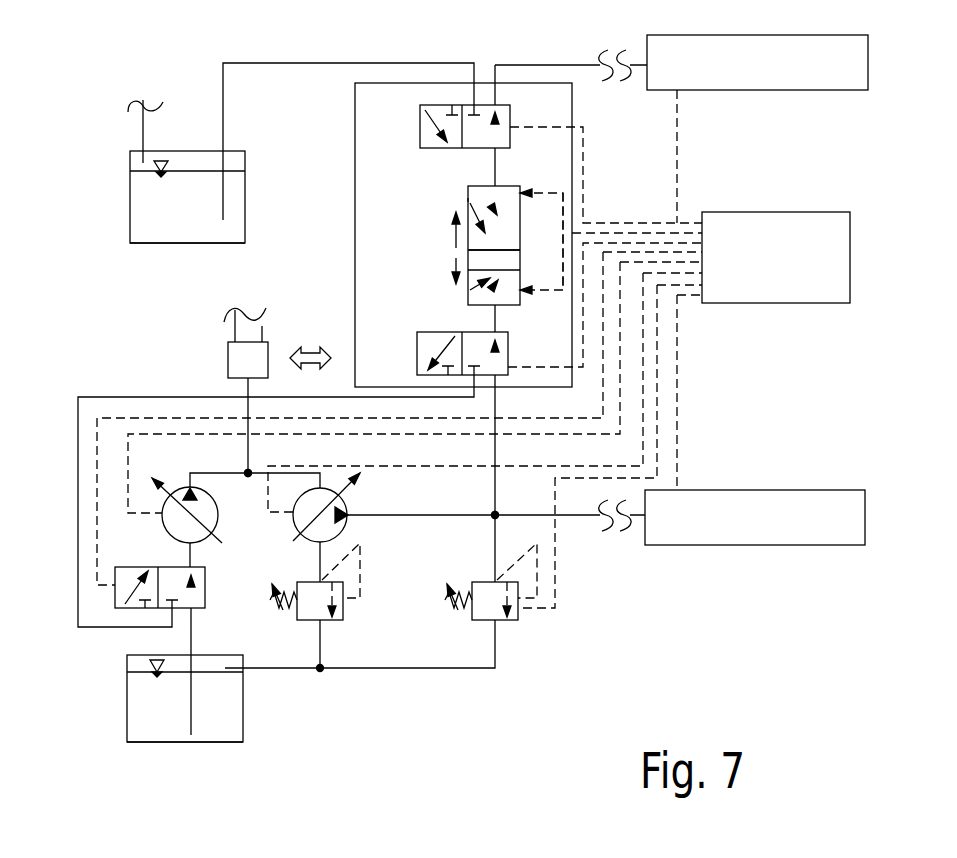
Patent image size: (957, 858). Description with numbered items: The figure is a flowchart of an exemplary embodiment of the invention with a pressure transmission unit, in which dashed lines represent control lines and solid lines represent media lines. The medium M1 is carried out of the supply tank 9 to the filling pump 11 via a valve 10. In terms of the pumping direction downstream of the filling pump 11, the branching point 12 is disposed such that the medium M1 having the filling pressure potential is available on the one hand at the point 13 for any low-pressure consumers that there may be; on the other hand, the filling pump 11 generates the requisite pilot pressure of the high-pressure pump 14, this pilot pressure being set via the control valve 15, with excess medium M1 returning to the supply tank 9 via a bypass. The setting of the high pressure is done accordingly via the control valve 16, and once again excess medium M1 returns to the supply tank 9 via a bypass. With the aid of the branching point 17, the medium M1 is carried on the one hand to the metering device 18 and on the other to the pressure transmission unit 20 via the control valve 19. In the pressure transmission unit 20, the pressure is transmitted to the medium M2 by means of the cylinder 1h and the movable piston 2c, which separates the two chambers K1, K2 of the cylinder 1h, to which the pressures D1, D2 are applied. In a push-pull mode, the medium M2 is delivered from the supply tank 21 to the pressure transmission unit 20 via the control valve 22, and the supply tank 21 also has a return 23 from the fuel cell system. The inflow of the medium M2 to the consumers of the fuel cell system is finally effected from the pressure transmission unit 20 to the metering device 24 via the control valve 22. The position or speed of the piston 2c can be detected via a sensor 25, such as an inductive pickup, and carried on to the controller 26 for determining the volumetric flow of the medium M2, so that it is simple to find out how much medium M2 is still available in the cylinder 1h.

The supply tank 9 is at (215, 742).
The valve 10 is at (205, 590).
The filling pump 11 is at (218, 520).
The branching point 12 is at (248, 473).
The point 13 is at (242, 320).
The high-pressure pump 14 is at (345, 528).
The control valve 15 is at (343, 608).
The control valve 16 is at (515, 620).
The branching point 17 is at (495, 515).
The metering device 18 is at (745, 531).
The control valve 19 is at (417, 350).
The pressure transmission unit 20 is at (454, 244).
The supply tank 21 is at (175, 243).
The control valve 22 is at (420, 120).
The return 23 is at (140, 101).
The metering device 24 is at (760, 78).
The sensor 25 is at (563, 262).
The controller 26 is at (780, 273).
The medium M1 is at (155, 712).
The medium M2 is at (155, 210).
The first piston chamber K1 is at (498, 280).
The second piston chamber K2 is at (497, 213).
The first pressure D1 is at (470, 290).
The second pressure D2 is at (470, 203).
The cylinder 1h is at (468, 200).
The movable piston 2c is at (480, 262).